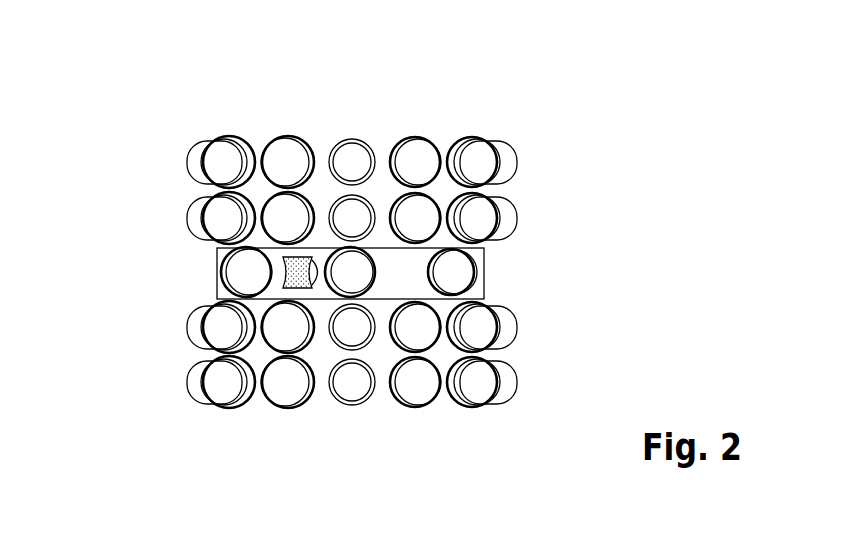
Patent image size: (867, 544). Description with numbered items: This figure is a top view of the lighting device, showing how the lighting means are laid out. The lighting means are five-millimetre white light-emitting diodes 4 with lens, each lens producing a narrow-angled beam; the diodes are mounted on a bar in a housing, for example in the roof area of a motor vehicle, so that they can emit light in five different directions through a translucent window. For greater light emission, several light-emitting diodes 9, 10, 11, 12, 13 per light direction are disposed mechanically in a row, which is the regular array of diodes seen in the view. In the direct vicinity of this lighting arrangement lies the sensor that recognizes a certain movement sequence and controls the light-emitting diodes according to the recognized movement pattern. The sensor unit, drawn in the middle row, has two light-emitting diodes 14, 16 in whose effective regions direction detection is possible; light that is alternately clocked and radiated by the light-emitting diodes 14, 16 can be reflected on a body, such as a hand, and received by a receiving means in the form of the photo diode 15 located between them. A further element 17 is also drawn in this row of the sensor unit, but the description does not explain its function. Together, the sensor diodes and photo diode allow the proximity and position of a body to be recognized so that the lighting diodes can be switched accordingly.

The white light-emitting diodes 4 is at (163, 148).
The light-emitting diode 9 is at (203, 157).
The light-emitting diode 10 is at (282, 155).
The light-emitting diode 11 is at (353, 155).
The light-emitting diode 12 is at (420, 153).
The light-emitting diode 13 is at (500, 155).
The light-emitting diode of the sensor unit 14 is at (237, 267).
The photo diode 15 is at (348, 283).
The light-emitting diode of the sensor unit 16 is at (468, 270).
The spacer element 17 is at (305, 286).